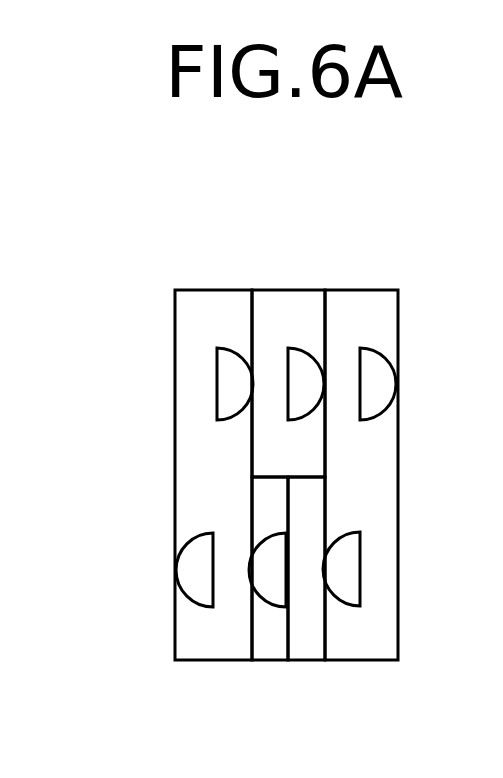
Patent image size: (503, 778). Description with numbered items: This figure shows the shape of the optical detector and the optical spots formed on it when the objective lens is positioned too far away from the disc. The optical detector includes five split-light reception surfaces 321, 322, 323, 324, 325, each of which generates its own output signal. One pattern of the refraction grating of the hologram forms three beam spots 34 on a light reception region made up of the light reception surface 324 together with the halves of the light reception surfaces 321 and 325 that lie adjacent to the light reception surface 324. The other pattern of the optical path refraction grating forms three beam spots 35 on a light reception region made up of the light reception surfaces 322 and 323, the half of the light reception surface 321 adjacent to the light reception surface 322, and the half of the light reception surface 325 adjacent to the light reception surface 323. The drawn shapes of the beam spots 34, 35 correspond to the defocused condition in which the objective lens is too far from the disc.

The light reception surface 321 is at (193, 462).
The light reception surface 322 is at (268, 650).
The light reception surface 323 is at (310, 647).
The light reception surface 324 is at (295, 297).
The light reception surface 325 is at (378, 452).
The beam spots 34 is at (286, 346).
The beam spots 35 is at (272, 602).